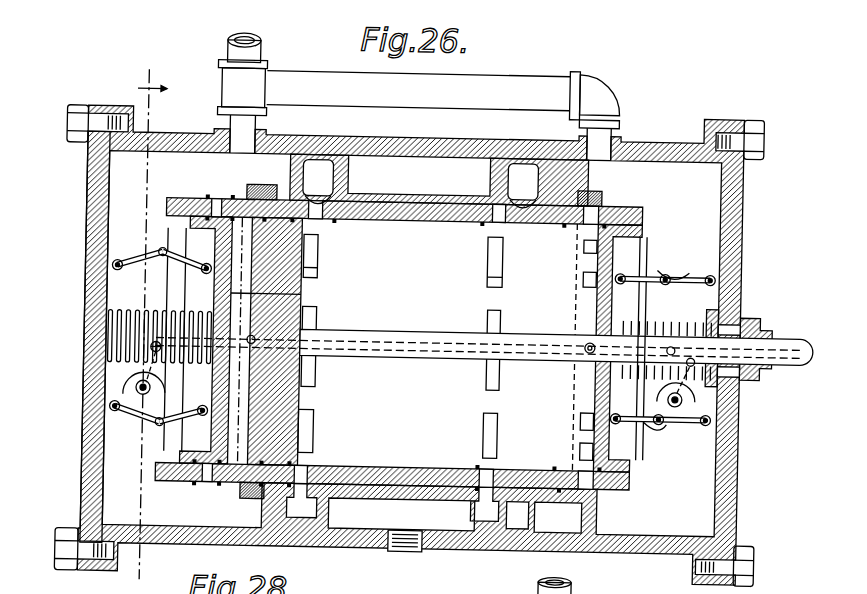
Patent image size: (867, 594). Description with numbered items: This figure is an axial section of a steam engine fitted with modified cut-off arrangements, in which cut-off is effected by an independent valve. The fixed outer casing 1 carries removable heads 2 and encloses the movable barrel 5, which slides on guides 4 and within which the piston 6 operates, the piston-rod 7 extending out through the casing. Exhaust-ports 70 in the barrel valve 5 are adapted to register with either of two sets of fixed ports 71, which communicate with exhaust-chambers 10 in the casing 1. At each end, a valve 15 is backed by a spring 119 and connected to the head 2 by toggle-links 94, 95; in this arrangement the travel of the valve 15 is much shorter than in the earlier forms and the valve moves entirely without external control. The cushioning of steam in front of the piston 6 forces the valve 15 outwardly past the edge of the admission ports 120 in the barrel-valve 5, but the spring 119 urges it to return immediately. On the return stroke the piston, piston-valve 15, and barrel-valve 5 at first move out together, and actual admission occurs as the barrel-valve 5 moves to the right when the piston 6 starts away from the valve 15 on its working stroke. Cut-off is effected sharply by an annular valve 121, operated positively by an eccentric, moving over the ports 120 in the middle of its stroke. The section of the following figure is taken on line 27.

The fixed outer casing 1 is at (460, 549).
The removable head 2 is at (85, 387).
The guide 4 is at (371, 218).
The movable barrel 5 is at (422, 436).
The piston 6 is at (278, 405).
The piston-rod 7 is at (385, 334).
The exhaust-chamber 10 is at (311, 174).
The valve 15 is at (299, 295).
The section line 27- 27 is at (144, 318).
The exhaust-port 70 is at (313, 250).
The fixed port 71 is at (337, 174).
The toggle-link 94 is at (203, 272).
The toggle-link 95 is at (138, 263).
The spring 119 is at (123, 339).
The admission port 120 is at (211, 209).
The annular valve 121 is at (255, 196).